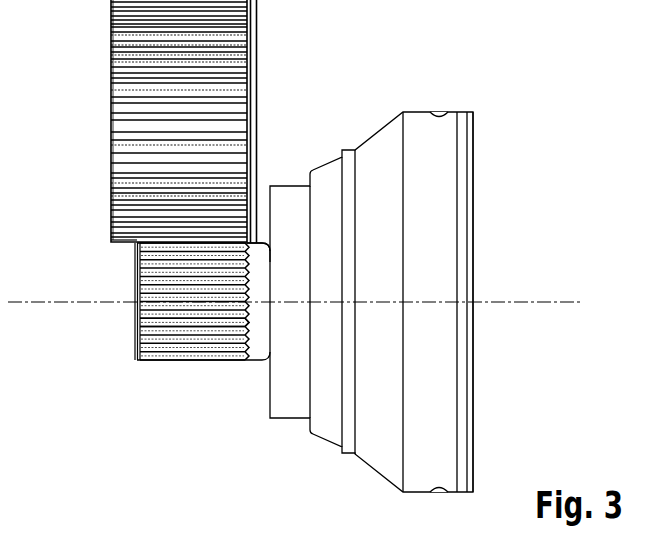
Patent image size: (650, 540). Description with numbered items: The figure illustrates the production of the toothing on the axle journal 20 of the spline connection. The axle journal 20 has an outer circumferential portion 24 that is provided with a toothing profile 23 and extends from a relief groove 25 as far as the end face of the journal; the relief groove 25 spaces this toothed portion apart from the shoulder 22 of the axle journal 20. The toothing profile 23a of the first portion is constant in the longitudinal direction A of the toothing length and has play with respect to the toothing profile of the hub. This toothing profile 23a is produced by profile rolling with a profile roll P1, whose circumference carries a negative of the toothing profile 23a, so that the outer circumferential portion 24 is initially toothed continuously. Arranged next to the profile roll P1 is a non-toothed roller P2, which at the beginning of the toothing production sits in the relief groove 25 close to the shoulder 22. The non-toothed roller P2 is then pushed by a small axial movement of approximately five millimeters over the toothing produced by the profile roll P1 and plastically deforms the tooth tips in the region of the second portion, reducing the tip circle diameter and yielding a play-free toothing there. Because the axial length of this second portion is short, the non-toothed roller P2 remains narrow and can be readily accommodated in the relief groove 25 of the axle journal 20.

The profile roll P1 is at (111, 24).
The non-toothed roller P2 is at (258, 24).
The longitudinal direction A is at (45, 301).
The axle journal 20 is at (161, 342).
The shoulder 22 is at (269, 396).
The toothing profile 23 is at (137, 328).
The toothing profile of the first portion 23a is at (167, 315).
The outer circumferential portion 24 is at (190, 323).
The relief groove 25 is at (260, 243).